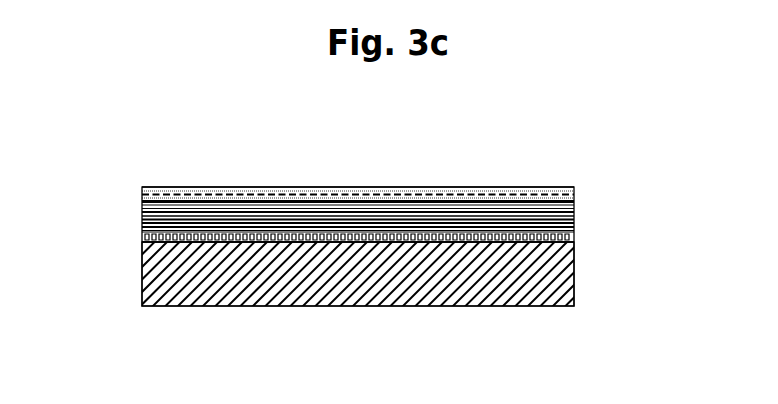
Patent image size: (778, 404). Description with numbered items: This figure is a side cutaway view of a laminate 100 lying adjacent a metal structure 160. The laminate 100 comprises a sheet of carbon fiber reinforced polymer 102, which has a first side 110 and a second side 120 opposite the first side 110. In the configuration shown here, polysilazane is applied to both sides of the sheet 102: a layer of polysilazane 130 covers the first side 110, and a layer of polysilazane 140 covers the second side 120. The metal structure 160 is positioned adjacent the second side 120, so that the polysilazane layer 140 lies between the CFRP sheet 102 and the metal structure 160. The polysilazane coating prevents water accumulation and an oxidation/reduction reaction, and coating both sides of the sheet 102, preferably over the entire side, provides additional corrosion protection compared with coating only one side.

The laminate 100 is at (386, 240).
The first side 110 is at (338, 187).
The layer of polysilazane 130 is at (574, 192).
The sheet of carbon fiber reinforced polymer 102 is at (552, 215).
The layer of polysilazane 140 is at (574, 237).
The second side 120 is at (375, 235).
The metal structure 160 is at (574, 268).